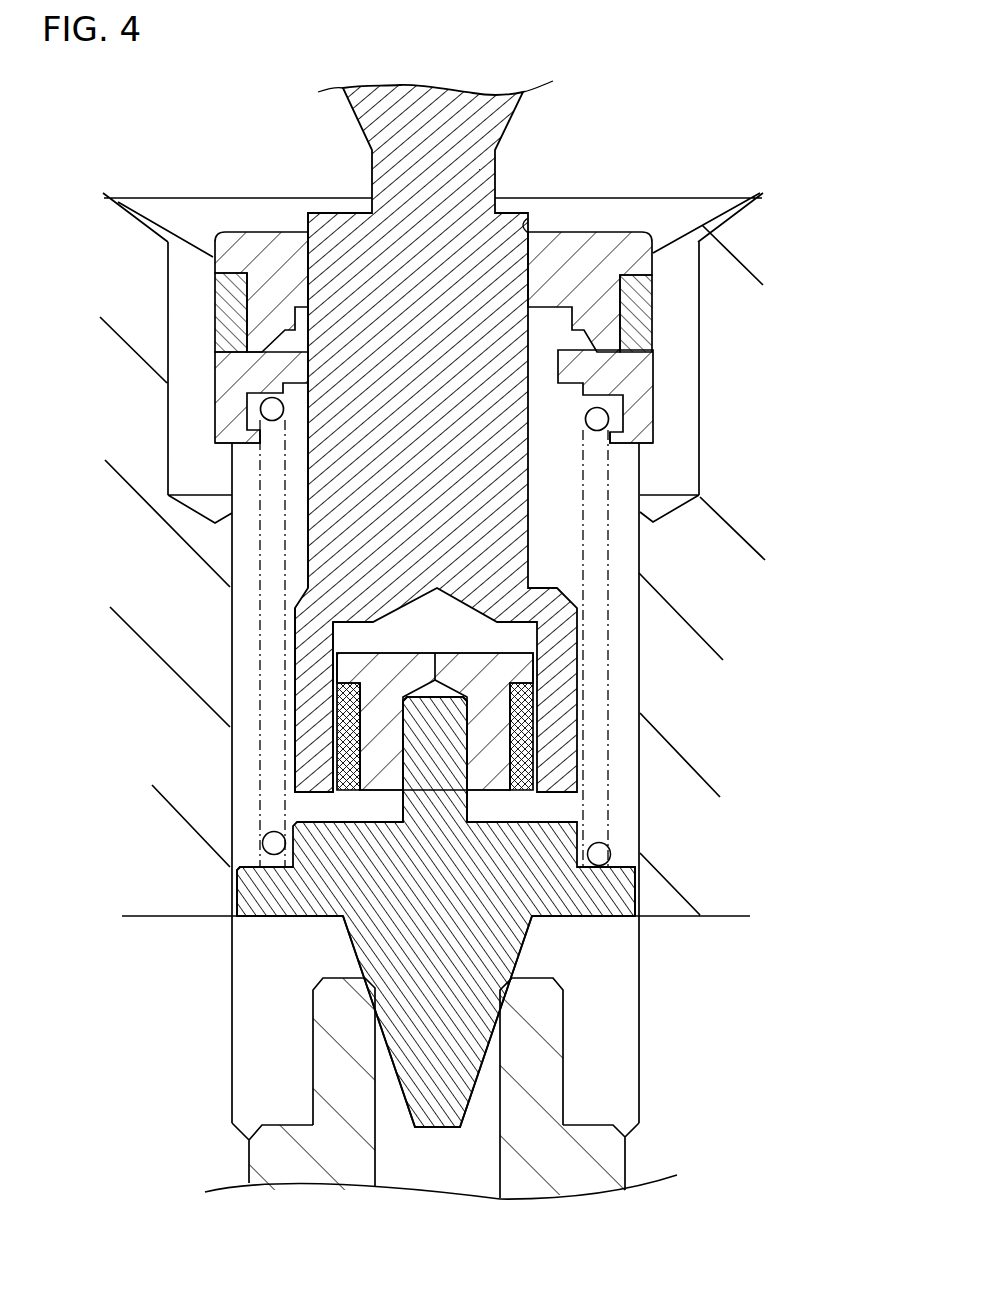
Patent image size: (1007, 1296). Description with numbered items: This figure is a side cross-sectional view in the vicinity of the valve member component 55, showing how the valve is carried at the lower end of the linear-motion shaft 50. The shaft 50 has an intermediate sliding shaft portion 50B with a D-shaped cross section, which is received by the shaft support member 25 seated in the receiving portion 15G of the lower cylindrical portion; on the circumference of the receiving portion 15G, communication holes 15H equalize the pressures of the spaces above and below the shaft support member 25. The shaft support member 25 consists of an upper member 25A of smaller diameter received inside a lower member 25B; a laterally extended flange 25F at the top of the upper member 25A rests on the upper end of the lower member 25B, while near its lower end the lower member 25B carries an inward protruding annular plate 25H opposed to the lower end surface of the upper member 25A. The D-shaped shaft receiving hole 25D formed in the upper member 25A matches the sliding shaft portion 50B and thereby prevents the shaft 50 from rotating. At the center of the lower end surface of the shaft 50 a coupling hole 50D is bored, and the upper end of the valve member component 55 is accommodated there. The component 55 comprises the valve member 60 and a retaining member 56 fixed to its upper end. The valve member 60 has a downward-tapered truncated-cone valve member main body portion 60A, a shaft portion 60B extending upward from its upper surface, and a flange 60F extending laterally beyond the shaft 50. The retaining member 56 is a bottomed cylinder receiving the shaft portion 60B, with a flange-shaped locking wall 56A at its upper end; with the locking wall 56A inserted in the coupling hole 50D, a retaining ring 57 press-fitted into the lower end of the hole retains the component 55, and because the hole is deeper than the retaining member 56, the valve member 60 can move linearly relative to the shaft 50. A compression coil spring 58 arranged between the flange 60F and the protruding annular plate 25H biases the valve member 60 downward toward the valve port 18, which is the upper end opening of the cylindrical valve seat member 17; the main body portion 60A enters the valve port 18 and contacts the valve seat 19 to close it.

The linear-motion shaft 50 is at (348, 106).
The sliding shaft portion 50B is at (378, 247).
The coupling hole 50D is at (333, 632).
The shaft support member 25 is at (653, 353).
The upper member 25A is at (603, 245).
The lower member 25B is at (647, 317).
The shaft receiving hole 25D is at (522, 233).
The flange 25F is at (647, 293).
The protruding annular plate 25H is at (640, 432).
The receiving portion 15G is at (655, 290).
The communication holes 15H is at (180, 345).
The compression coil spring 58 is at (613, 552).
The flange-shaped locking wall 56A is at (523, 667).
The retaining member 56 is at (490, 713).
The retaining ring 57 is at (523, 733).
The shaft portion 60B is at (440, 744).
The valve member component 55 is at (370, 770).
The flange 60F is at (613, 887).
The valve member main body portion 60A is at (383, 927).
The valve seat 19 is at (340, 977).
The valve member 60 is at (537, 917).
The valve seat member 17 is at (566, 1060).
The valve port 18 is at (490, 1108).